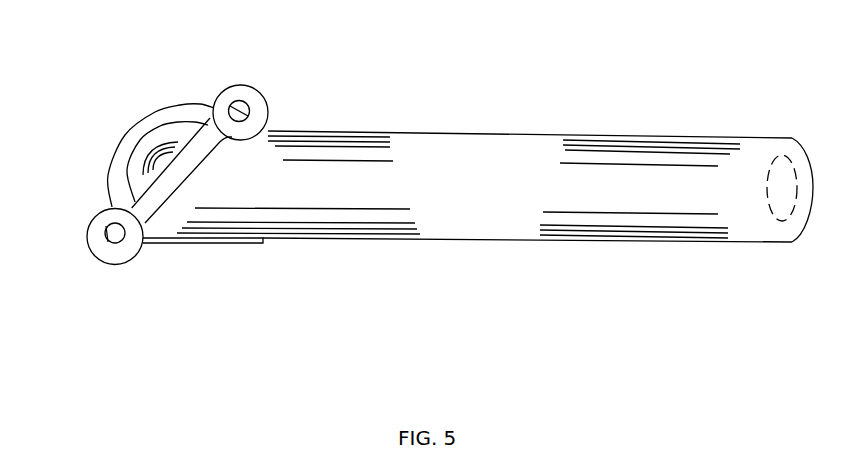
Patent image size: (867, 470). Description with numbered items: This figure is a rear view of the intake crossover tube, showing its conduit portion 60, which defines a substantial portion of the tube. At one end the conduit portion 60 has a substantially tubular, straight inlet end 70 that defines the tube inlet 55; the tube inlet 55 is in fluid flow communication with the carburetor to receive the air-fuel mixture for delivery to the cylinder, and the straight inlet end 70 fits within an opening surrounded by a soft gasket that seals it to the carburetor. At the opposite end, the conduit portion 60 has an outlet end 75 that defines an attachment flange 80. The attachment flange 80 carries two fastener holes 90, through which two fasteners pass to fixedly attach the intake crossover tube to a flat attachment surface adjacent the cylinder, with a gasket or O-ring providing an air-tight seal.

The tube inlet 55 is at (798, 193).
The conduit portion 60 is at (520, 153).
The inlet end 70 is at (782, 147).
The outlet end 75 is at (163, 246).
The attachment flange 80 is at (216, 106).
The fastener holes 90 is at (230, 104).